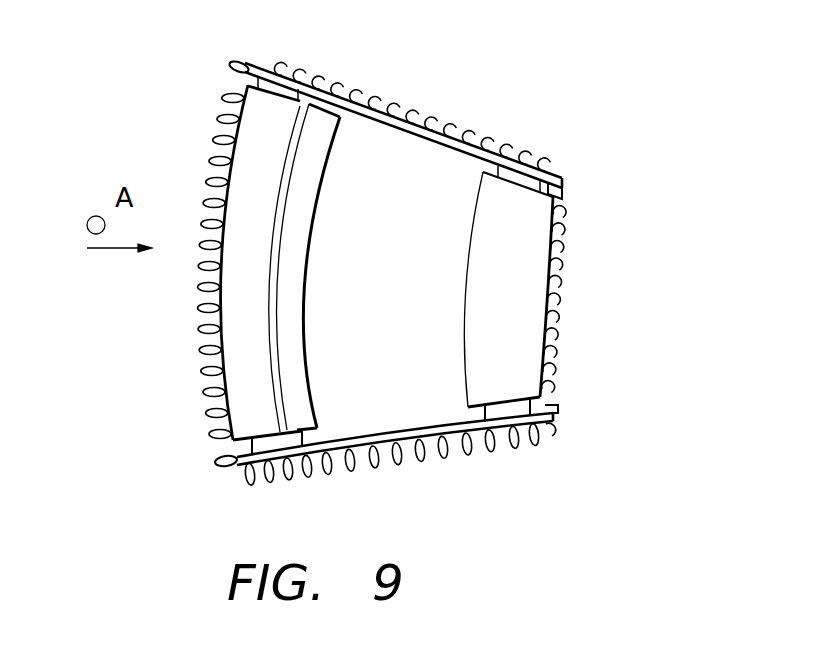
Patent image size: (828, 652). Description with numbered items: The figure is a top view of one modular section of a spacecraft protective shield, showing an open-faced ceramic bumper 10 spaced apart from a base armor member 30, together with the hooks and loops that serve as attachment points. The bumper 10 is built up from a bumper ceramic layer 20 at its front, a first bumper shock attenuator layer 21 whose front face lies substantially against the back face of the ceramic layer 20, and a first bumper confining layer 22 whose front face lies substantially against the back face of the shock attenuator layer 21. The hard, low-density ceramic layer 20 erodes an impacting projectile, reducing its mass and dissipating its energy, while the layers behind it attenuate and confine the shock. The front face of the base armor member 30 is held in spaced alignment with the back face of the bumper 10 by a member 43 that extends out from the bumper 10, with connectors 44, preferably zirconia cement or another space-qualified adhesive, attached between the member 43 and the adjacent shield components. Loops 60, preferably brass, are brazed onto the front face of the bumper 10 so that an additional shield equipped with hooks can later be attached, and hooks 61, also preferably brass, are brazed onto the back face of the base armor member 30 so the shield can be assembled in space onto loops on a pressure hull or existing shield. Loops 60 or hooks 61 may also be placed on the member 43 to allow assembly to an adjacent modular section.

The bumper 10 is at (240, 66).
The bumper ceramic layer 20 is at (261, 118).
The first bumper shock attenuator layer 21 is at (301, 106).
The first bumper confining layer 22 is at (297, 260).
The base armor member 30 is at (513, 222).
The member 43 is at (455, 432).
The connectors 44 is at (541, 399).
The loops 60 is at (195, 328).
The hooks 61 is at (440, 117).